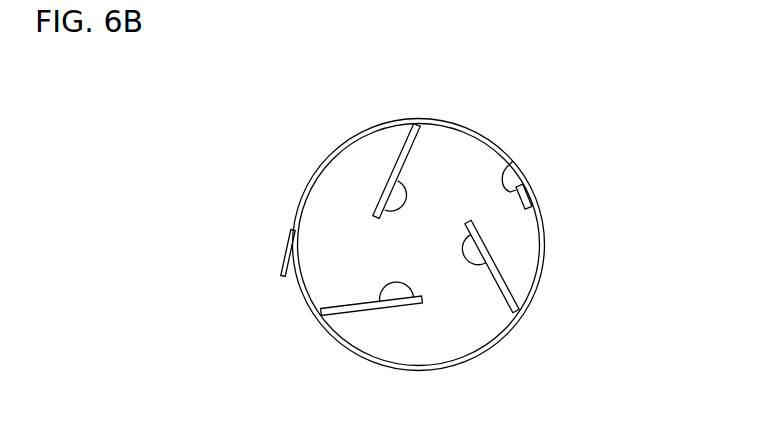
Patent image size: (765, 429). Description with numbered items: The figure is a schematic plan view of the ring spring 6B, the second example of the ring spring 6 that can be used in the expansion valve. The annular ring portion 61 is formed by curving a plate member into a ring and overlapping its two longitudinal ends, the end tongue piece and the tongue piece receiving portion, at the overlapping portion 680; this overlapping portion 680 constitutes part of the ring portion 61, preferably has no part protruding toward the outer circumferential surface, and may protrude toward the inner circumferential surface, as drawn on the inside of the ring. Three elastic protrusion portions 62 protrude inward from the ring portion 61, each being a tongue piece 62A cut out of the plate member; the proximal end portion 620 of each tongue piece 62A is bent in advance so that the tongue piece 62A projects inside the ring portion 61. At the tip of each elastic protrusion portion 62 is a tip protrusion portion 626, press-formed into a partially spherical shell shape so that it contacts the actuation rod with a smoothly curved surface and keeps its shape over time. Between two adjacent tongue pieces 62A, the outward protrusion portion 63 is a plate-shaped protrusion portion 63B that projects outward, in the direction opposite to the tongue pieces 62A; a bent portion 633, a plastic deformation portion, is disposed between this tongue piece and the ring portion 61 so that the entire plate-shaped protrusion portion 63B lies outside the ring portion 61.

The ring spring 6 is at (405, 233).
The ring spring of the second example 6B is at (323, 76).
The ring portion 61 is at (545, 244).
The elastic protrusion portion 62 is at (435, 233).
The tongue piece 62A is at (480, 316).
The proximal end portion 620 is at (417, 122).
The tip protrusion portion 626 is at (466, 258).
The outward protrusion portion 63 is at (252, 261).
The plate-shaped protrusion portion 63B is at (252, 261).
The bent portion 633 is at (294, 234).
The overlapping portion 680 is at (507, 165).